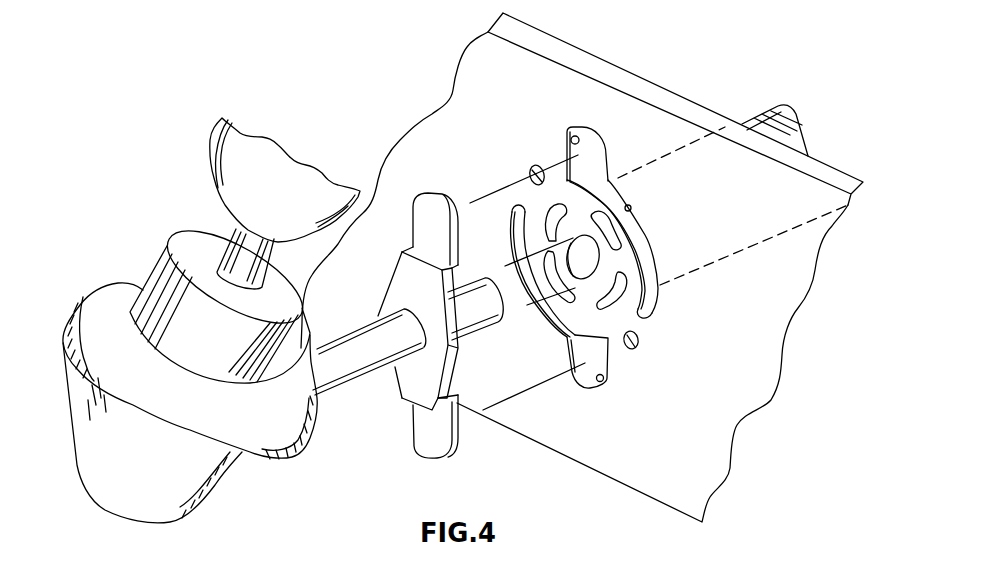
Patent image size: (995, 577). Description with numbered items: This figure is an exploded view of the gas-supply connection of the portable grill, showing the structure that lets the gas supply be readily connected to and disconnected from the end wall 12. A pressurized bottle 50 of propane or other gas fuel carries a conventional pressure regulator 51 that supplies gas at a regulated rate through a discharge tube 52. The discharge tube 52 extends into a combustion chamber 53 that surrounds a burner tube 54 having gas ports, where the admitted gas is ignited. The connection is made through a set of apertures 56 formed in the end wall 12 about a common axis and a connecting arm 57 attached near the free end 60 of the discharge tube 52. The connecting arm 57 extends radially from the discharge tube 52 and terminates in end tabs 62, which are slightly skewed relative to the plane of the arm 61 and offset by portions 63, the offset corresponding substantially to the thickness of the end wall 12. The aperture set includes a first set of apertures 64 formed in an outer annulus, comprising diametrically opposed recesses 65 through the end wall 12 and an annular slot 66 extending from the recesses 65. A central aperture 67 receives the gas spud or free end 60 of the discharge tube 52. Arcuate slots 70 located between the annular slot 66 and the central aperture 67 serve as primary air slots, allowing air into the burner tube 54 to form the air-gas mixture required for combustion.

The end wall 12 is at (458, 66).
The pressurized bottle 50 is at (208, 148).
The pressure regulator 51 is at (264, 462).
The discharge tube 52 is at (345, 390).
The combustion chamber 53 is at (667, 78).
The burner tube 54 is at (760, 112).
The set of apertures 56 is at (587, 258).
The connecting arm 57 is at (401, 316).
The free end 60 is at (481, 328).
The arm 61 is at (380, 316).
The end tabs 62 is at (419, 201).
The offset portions 63 is at (410, 250).
The first set of apertures 64 is at (655, 246).
The recesses 65 is at (567, 132).
The annular slot 66 is at (512, 243).
The central aperture 67 is at (585, 279).
The arcuate slots 70 is at (615, 302).